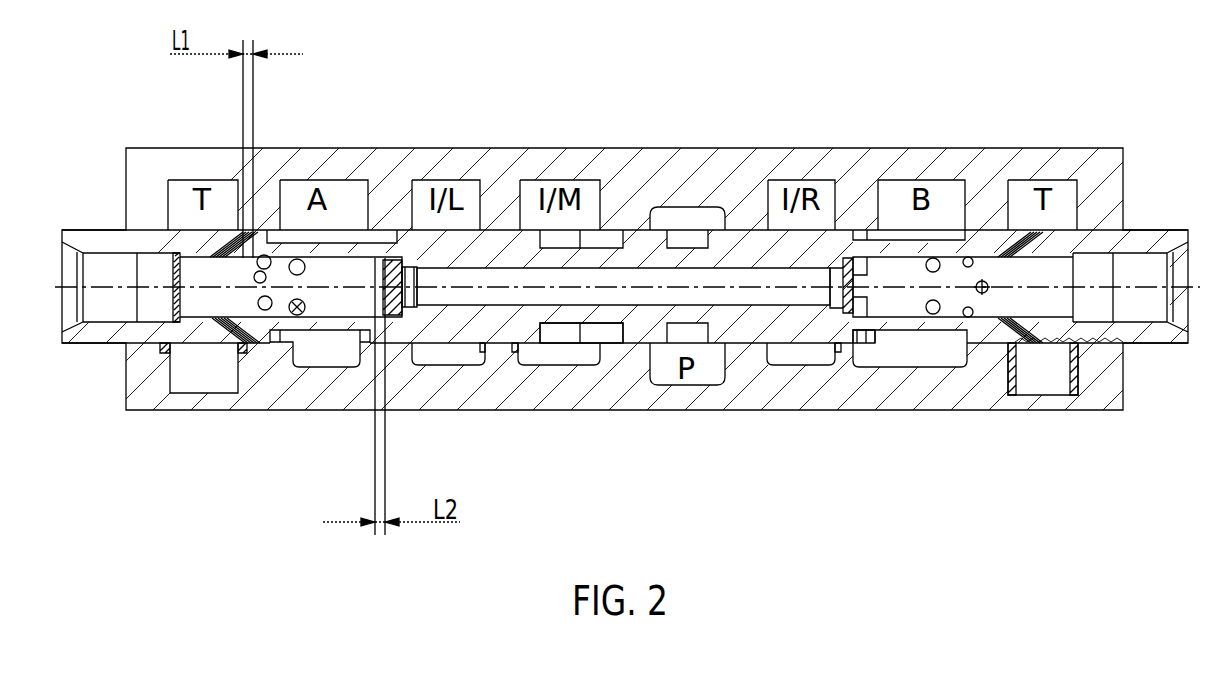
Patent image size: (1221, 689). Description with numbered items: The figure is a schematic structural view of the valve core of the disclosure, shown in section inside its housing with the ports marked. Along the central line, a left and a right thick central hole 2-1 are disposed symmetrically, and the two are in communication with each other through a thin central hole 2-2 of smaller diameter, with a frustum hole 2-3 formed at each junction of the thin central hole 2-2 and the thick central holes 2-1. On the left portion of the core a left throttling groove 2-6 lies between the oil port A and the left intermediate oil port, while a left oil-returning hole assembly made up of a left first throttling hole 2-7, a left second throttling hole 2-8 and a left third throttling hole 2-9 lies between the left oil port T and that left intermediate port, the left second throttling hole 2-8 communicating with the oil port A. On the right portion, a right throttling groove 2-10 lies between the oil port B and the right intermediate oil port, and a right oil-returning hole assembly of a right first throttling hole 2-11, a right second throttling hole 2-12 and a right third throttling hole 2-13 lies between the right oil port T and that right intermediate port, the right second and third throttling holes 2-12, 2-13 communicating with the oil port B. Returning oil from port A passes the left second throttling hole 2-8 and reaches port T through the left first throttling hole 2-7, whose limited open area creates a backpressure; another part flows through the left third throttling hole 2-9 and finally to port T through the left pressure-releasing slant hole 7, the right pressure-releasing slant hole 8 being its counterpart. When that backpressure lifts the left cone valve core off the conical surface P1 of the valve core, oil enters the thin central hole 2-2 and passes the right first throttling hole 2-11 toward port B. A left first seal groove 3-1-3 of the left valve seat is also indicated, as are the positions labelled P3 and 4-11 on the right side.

The left pressure-releasing slant hole 7 is at (243, 236).
The right pressure-releasing slant hole 8 is at (1027, 256).
The thick central hole 2-1 is at (355, 280).
The thin central hole 2-2 is at (600, 300).
The frustum hole 2-3 is at (681, 426).
The left throttling groove 2-6 is at (405, 300).
The left first throttling hole 2-7 is at (265, 255).
The left second throttling hole 2-8 is at (300, 259).
The left third throttling hole 2-9 is at (383, 275).
The right throttling groove 2-10 is at (864, 340).
The right first throttling hole 2-11 is at (848, 262).
The right second throttling hole 2-12 is at (933, 314).
The right third throttling hole 2-13 is at (938, 258).
The left first seal groove 3-1-3 is at (242, 347).
The seal ring 4-11 is at (1010, 348).
The conical surface P1 is at (500, 352).
The pilot port P3 is at (830, 350).